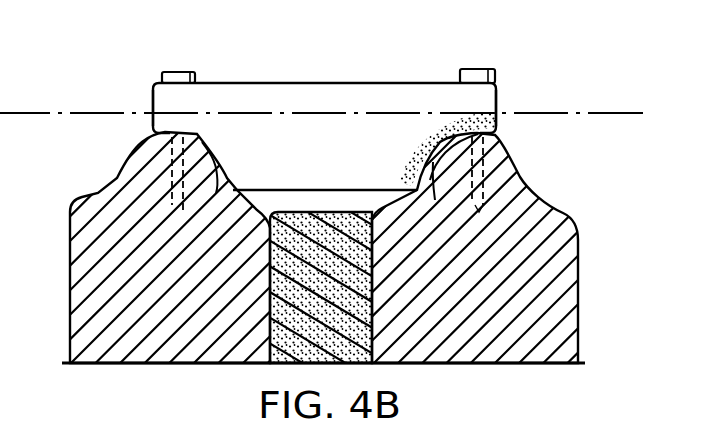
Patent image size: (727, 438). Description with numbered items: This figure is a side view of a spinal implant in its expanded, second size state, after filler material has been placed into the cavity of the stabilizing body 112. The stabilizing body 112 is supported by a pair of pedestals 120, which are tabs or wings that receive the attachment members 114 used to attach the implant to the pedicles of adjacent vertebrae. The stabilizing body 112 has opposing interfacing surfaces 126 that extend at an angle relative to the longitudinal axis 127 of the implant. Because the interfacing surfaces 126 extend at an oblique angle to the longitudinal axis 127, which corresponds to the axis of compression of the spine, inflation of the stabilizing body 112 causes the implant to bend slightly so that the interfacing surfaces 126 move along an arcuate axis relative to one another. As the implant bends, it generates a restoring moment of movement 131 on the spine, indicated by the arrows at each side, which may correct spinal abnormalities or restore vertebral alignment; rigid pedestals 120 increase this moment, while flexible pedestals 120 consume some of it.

The stabilizing body 112 is at (323, 83).
The attachment members 114 is at (182, 71).
The pedestals 120 is at (152, 103).
The interfacing surfaces 126 is at (216, 193).
The longitudinal axis 127 is at (601, 112).
The restoring moment of movement 131 is at (100, 307).